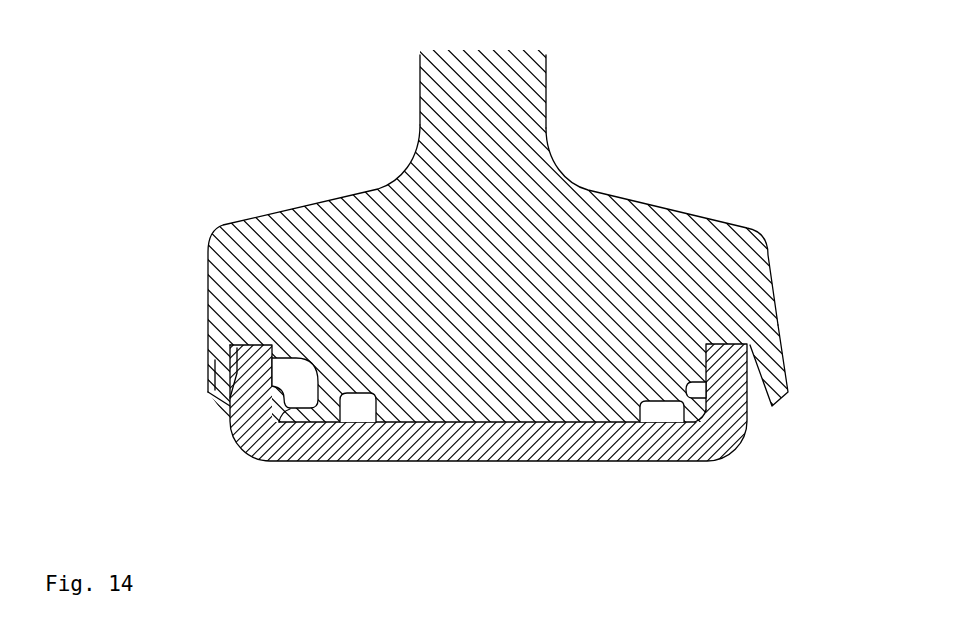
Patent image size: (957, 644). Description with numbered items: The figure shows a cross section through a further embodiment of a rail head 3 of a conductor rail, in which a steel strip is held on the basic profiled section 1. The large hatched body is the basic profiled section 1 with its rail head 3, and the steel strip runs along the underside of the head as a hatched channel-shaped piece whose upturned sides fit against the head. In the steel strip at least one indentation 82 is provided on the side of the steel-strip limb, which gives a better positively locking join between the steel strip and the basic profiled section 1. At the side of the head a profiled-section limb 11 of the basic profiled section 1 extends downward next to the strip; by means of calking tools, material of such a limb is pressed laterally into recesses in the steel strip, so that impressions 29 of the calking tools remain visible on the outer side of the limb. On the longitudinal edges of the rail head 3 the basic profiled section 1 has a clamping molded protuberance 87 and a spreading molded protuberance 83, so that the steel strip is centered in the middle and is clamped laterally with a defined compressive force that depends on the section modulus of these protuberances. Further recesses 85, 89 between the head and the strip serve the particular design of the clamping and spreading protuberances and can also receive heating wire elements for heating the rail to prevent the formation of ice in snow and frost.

The basic profiled section 1 is at (447, 187).
The rail head 3 is at (483, 300).
The indentation 82 is at (743, 367).
The impressions of the calking tools 29 is at (212, 374).
The profiled-section limb 11 is at (777, 392).
The clamping molded protuberance 87 is at (280, 410).
The recess 89 is at (354, 406).
The recess 85 is at (658, 408).
The spreading molded protuberance 83 is at (707, 413).